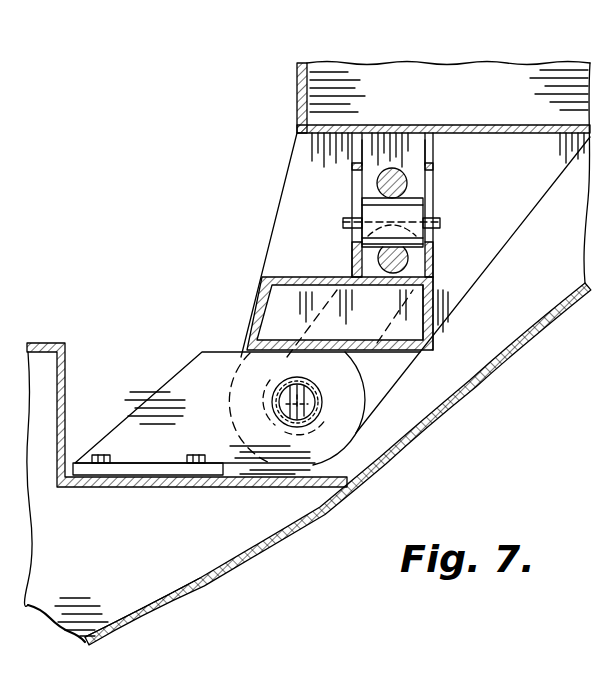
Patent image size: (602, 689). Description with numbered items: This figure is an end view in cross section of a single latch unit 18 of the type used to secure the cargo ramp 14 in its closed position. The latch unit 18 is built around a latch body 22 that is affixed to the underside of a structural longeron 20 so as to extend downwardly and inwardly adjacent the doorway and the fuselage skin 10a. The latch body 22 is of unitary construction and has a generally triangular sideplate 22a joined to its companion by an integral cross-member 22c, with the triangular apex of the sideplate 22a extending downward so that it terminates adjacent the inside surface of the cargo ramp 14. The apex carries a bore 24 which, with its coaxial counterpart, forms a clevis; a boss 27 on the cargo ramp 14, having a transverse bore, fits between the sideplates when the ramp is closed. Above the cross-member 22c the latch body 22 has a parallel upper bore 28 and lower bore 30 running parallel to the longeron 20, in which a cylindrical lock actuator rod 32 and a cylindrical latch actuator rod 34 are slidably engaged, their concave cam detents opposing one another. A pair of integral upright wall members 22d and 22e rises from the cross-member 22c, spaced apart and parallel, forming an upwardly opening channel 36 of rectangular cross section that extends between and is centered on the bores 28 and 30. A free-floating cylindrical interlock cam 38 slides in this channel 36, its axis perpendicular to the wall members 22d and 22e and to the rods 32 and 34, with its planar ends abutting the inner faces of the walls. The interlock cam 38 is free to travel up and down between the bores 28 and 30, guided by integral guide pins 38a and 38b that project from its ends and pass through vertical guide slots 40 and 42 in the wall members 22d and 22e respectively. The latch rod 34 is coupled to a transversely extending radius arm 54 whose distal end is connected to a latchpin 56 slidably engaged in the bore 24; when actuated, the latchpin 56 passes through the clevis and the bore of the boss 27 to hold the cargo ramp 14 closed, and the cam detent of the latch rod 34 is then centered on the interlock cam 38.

The fuselage skin 10a is at (490, 378).
The cargo ramp 14 is at (210, 545).
The latch unit 18 is at (466, 306).
The structural longeron 20 is at (297, 97).
The latch body 22 is at (266, 228).
The sideplate 22a is at (297, 182).
The cross-member 22c is at (295, 312).
The wall member 22d is at (352, 250).
The wall member 22e is at (445, 327).
The bore 24 is at (328, 410).
The boss 27 is at (195, 381).
The upper bore 28 is at (416, 176).
The lower bore 30 is at (436, 321).
The lock actuator rod 32 is at (409, 184).
The latch actuator rod 34 is at (414, 268).
The channel 36 is at (401, 163).
The interlock cam 38 is at (410, 212).
The guide pin 38a is at (342, 222).
The guide pin 38b is at (438, 222).
The vertical guide slot 40 is at (350, 165).
The vertical guide slot 42 is at (433, 180).
The radius arm 54 is at (386, 405).
The latchpin 56 is at (312, 418).